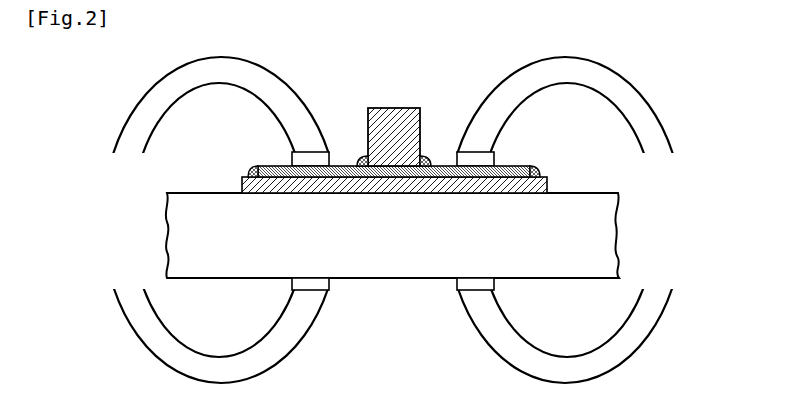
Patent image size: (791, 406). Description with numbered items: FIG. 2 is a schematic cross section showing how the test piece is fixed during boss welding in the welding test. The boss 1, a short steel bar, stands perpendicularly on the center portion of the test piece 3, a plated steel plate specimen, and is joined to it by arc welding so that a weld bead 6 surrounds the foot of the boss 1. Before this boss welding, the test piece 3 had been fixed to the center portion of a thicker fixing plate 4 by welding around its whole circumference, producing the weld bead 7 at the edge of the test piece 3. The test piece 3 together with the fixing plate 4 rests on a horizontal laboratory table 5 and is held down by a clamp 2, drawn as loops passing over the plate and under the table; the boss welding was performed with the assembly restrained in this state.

The boss 1 is at (405, 108).
The clamp 2 is at (190, 73).
The test piece 3 is at (346, 162).
The fixing plate 4 is at (240, 183).
The laboratory table 5 is at (204, 193).
The weld bead 6 is at (434, 158).
The weld bead at whole circumference of welded portion of test piece 7 is at (538, 167).